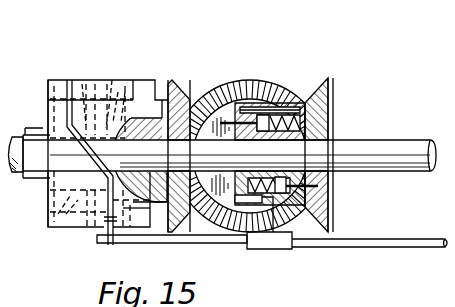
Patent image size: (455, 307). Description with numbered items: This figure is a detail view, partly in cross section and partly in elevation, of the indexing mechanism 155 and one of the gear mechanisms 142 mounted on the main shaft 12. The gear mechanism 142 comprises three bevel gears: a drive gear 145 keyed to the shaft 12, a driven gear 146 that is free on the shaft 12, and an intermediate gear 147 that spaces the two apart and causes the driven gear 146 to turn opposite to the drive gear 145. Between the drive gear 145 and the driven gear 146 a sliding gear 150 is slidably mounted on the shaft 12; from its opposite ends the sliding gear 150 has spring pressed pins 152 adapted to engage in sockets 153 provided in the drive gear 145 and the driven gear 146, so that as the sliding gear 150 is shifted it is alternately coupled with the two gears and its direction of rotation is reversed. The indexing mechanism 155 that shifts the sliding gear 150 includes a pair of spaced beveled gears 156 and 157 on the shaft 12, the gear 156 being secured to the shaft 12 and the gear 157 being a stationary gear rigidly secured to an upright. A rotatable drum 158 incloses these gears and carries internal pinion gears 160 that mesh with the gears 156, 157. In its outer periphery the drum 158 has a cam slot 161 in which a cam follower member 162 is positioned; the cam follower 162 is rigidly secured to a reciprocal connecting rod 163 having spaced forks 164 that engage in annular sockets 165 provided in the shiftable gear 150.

The main shaft 12 is at (357, 142).
The gear mechanism 142 is at (358, 98).
The drive gear 145 is at (186, 95).
The driven gear 146 is at (331, 92).
The intermediate gear 147 is at (254, 78).
The sliding gear 150 is at (270, 104).
The spring pressed pin 152 is at (241, 80).
The socket 153 is at (219, 102).
The indexing mechanism 155 is at (78, 238).
The beveled gear 156 is at (50, 106).
The stationary gear 157 is at (112, 92).
The rotatable drum 158 is at (81, 80).
The internal pinion gear 160 is at (112, 78).
The cam slot 161 is at (68, 84).
The cam follower member 162 is at (107, 242).
The connecting rod 163 is at (191, 244).
The fork 164 is at (270, 250).
The annular socket 165 is at (305, 100).